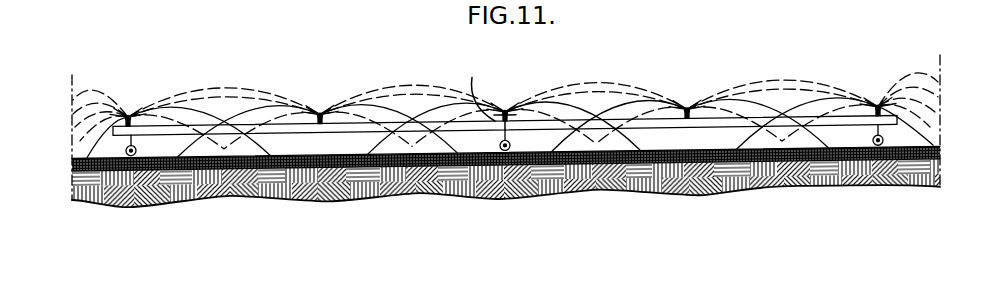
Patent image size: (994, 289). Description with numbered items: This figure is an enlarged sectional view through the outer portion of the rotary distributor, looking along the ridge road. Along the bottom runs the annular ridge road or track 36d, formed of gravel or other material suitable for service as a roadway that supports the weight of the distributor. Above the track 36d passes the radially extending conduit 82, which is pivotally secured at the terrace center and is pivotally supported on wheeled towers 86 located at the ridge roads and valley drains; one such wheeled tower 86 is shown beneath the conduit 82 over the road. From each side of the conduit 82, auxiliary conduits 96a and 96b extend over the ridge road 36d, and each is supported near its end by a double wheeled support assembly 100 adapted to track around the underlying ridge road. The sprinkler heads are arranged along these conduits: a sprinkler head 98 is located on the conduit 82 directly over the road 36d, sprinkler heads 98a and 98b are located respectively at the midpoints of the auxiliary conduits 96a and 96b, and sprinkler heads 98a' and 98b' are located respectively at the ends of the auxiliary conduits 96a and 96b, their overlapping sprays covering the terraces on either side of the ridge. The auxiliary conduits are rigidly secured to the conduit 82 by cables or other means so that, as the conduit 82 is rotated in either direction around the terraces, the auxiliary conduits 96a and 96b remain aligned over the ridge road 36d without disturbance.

The sprinkler head 98a' is at (125, 88).
The auxiliary conduit 96a is at (243, 133).
The sprinkler head 98a is at (335, 84).
The wheeled tower 86 is at (485, 91).
The sprinkler head 98 is at (506, 119).
The conduit 82 is at (528, 128).
The sprinkler head 98b is at (679, 79).
The auxiliary conduit 96b is at (753, 135).
The sprinkler head 98b' is at (878, 76).
The double wheeled support assembly 100 is at (126, 152).
The track 36d is at (410, 180).